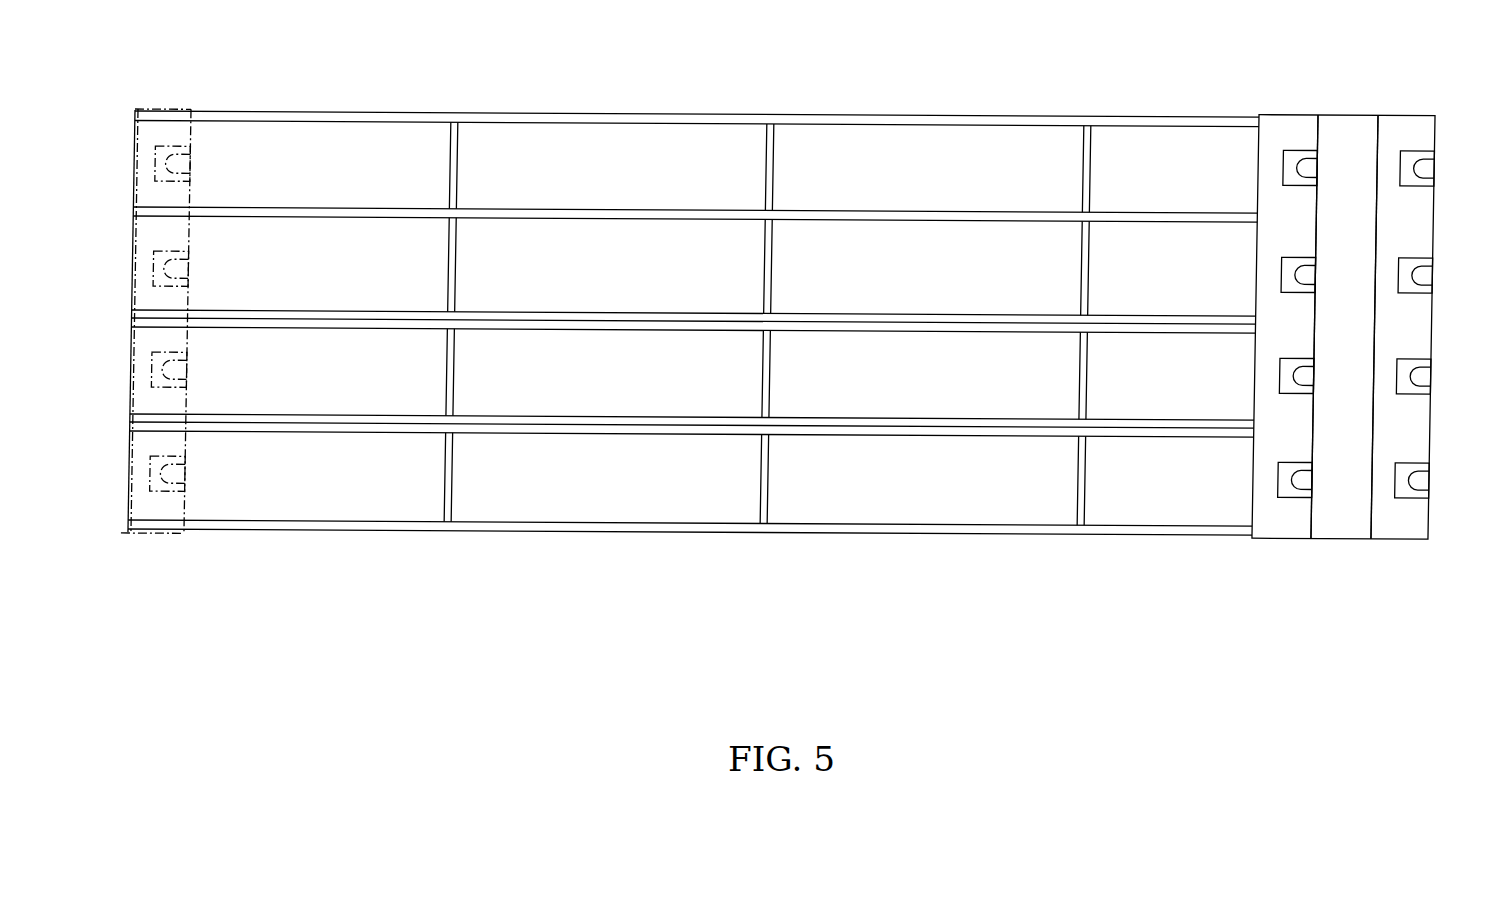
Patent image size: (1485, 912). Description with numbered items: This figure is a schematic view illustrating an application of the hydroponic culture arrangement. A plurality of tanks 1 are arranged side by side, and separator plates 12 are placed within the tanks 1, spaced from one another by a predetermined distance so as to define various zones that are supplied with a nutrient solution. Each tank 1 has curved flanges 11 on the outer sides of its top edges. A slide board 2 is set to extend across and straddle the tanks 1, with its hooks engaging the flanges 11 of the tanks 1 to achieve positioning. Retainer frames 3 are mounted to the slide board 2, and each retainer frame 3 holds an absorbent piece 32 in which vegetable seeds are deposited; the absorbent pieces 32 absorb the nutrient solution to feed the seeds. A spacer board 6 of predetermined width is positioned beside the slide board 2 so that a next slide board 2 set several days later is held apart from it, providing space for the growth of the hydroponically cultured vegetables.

The tank 1 is at (690, 322).
The curved flange 11 is at (1091, 119).
The separator plate 12 is at (767, 150).
The slide board 2 is at (1321, 327).
The retainer frame 3 is at (1320, 264).
The absorbent piece 32 is at (1305, 162).
The spacer board 6 is at (1332, 525).